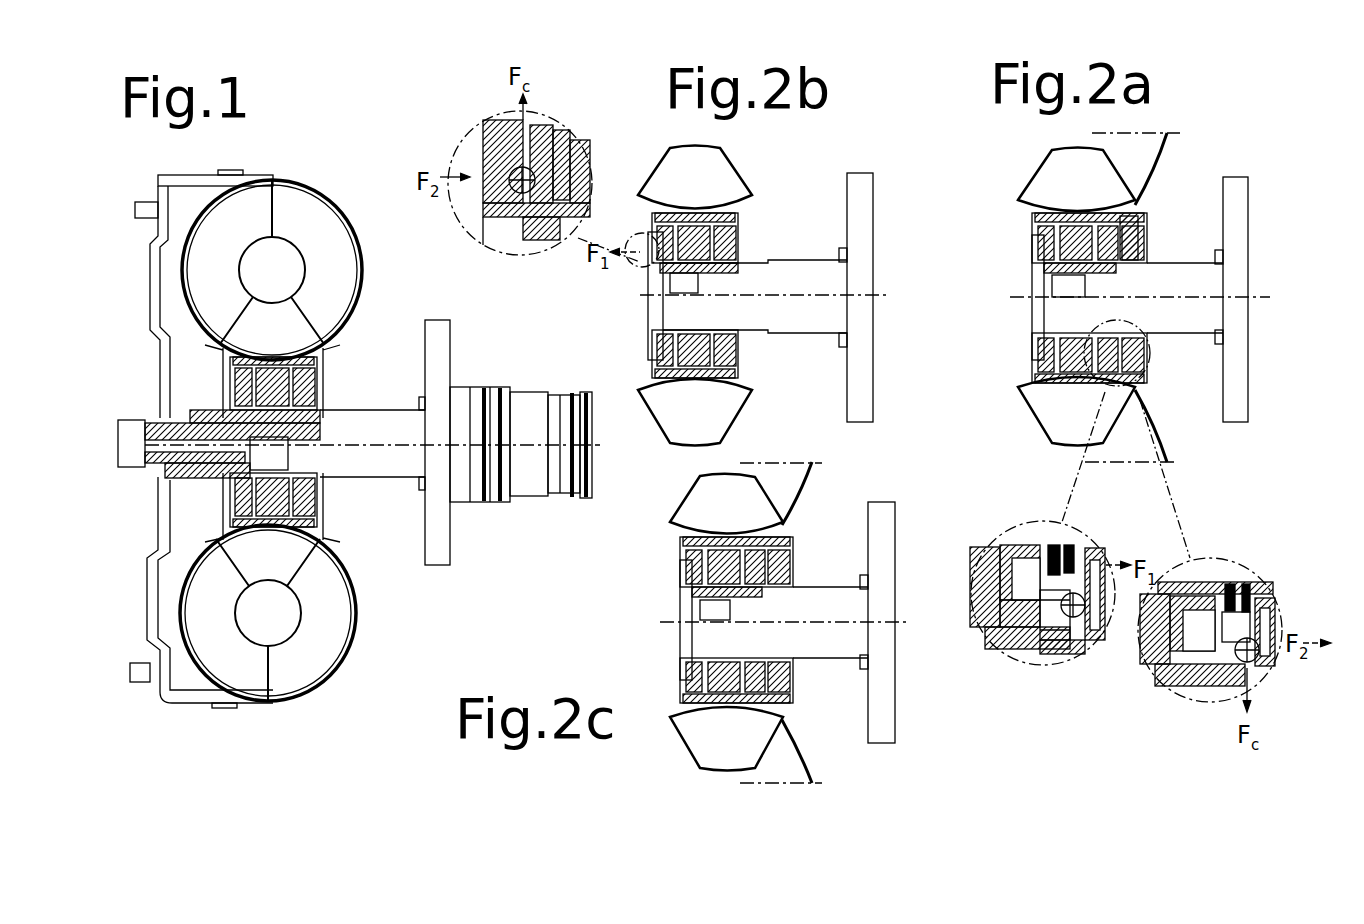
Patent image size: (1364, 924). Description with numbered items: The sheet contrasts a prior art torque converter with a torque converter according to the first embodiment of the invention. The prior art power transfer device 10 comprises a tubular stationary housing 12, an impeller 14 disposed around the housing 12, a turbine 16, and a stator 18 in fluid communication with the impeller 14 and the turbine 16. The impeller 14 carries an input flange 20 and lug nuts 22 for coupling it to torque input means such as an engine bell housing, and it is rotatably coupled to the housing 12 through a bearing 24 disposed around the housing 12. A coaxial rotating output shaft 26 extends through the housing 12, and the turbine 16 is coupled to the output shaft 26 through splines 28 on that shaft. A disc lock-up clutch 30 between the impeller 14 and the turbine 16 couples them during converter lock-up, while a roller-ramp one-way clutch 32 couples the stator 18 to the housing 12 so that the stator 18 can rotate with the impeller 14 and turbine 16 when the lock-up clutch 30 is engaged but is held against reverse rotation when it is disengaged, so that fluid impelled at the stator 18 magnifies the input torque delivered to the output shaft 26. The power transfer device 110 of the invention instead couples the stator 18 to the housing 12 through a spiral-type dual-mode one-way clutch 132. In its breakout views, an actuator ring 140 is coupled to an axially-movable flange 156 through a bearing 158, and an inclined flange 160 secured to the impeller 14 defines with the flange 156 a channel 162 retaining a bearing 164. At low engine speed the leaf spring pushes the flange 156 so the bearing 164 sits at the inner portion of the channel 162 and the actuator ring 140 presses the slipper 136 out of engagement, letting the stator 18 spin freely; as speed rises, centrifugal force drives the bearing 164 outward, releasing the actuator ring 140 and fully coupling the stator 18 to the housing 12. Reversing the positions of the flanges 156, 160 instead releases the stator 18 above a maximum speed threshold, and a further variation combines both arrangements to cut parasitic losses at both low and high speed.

In FIG. 1, the power transfer device 10 is at (197, 826).
In FIG. 1, the tubular stationary housing 12 is at (442, 368).
In FIG. 2B, the tubular stationary housing 12 is at (868, 237).
In FIG. 2C, the tubular stationary housing 12 is at (877, 690).
In FIG. 2A, the tubular stationary housing 12 is at (1245, 260).
In FIG. 1, the impeller 14 is at (327, 237).
In FIG. 2C, the impeller 14 is at (788, 482).
In FIG. 2A, the impeller 14 is at (1143, 157).
In FIG. 1, the turbine 16 is at (205, 278).
In FIG. 1, the stator 18 is at (312, 327).
In FIG. 2B, the stator 18 is at (712, 178).
In FIG. 2C, the stator 18 is at (697, 507).
In FIG. 2A, the stator 18 is at (1052, 180).
In FIG. 1, the input flange 20 is at (140, 610).
In FIG. 1, the lug nuts 22 is at (135, 210).
In FIG. 1, the bearing 24 is at (353, 408).
In FIG. 1, the output shaft 26 is at (158, 410).
In FIG. 1, the splines 28 is at (155, 480).
In FIG. 1, the disc lock-up clutch 30 is at (165, 188).
In FIG. 1, the roller-ramp one-way clutch 32 is at (317, 513).
In FIG. 2A, the power transfer device 110 is at (1348, 391).
In FIG. 2A, the spiral-type dual-mode one-way clutch 132 is at (1010, 226).
In FIG. 2A, the slipper 136 is at (997, 558).
In FIG. 2B, the actuator ring 140 is at (572, 162).
In FIG. 2B, the axially-movable flange 156 is at (552, 138).
In FIG. 2A, the bearing 158 is at (1062, 543).
In FIG. 2B, the inclined flange 160 is at (487, 122).
In FIG. 2A, the channel 162 is at (1058, 665).
In FIG. 2B, the bearing 164 is at (480, 163).